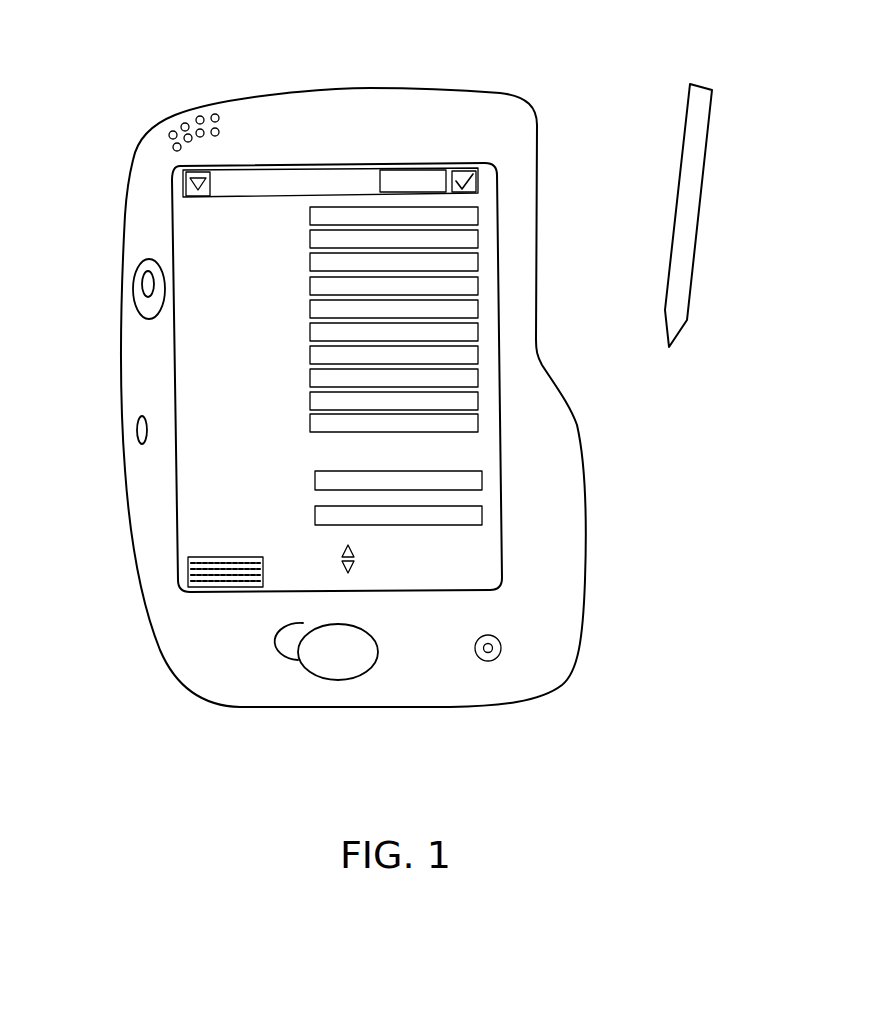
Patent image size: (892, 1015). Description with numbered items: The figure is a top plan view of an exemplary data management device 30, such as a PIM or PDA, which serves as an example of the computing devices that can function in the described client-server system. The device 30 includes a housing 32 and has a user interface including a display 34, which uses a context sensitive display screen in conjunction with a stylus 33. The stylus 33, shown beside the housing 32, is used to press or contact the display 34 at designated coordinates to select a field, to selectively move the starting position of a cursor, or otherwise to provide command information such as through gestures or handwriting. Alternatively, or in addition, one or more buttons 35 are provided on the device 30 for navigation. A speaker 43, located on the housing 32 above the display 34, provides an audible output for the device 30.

The data management device 30 is at (112, 57).
The housing 32 is at (368, 90).
The stylus 33 is at (698, 235).
The display 34 is at (452, 422).
The buttons 35 is at (147, 284).
The speaker 43 is at (200, 115).